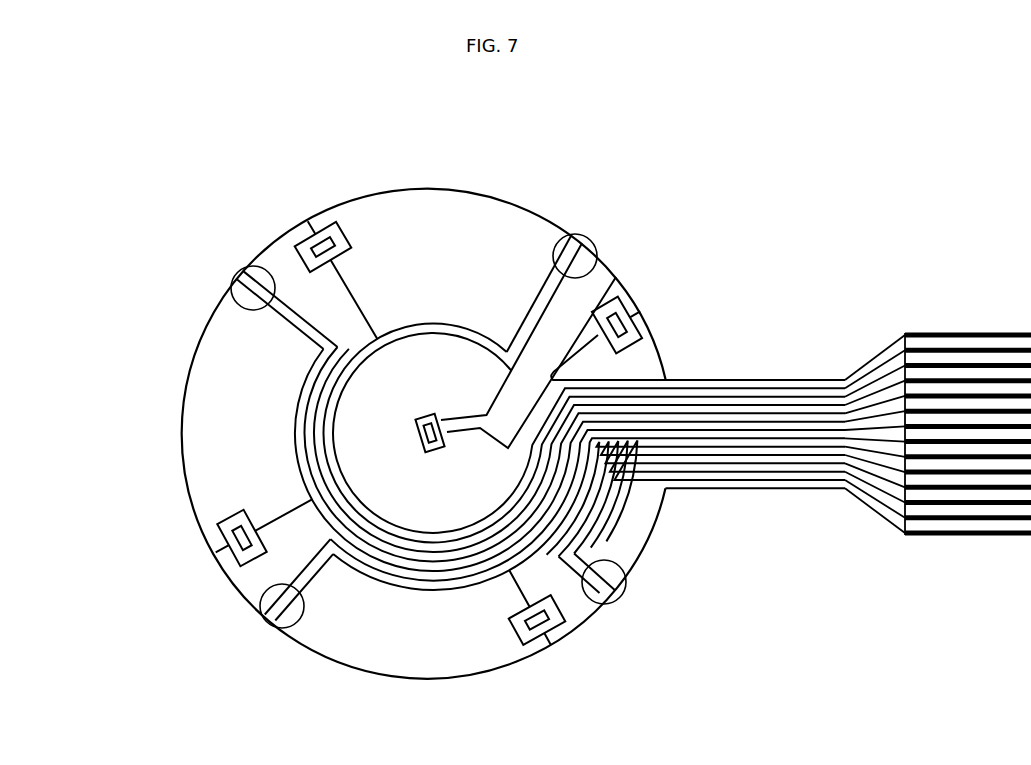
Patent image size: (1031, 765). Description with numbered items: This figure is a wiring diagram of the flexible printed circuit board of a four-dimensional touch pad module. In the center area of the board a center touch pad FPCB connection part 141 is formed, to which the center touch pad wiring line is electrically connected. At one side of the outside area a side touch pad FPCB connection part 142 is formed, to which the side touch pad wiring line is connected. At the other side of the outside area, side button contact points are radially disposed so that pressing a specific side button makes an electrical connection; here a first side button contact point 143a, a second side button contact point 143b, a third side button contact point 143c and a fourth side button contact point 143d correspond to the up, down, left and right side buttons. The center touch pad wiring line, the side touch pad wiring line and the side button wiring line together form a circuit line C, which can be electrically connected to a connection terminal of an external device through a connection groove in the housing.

The center touch pad FPCB connection part 141 is at (425, 440).
The side touch pad FPCB connection part 142 is at (322, 230).
The first side button contact point 143a is at (245, 284).
The second side button contact point 143b is at (625, 580).
The third side button contact point 143c is at (272, 615).
The fourth side button contact point 143d is at (592, 245).
The circuit line C is at (722, 372).